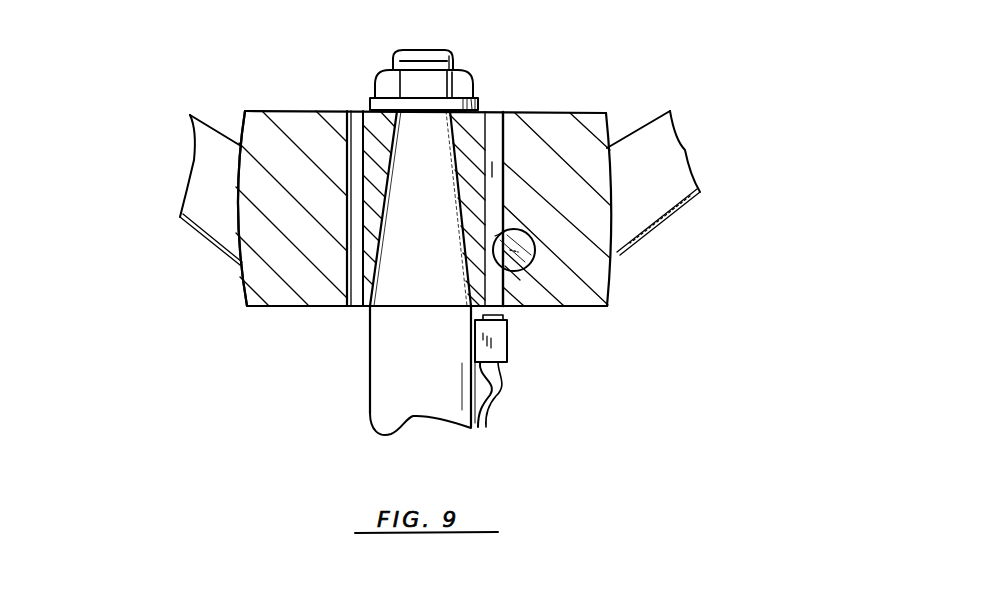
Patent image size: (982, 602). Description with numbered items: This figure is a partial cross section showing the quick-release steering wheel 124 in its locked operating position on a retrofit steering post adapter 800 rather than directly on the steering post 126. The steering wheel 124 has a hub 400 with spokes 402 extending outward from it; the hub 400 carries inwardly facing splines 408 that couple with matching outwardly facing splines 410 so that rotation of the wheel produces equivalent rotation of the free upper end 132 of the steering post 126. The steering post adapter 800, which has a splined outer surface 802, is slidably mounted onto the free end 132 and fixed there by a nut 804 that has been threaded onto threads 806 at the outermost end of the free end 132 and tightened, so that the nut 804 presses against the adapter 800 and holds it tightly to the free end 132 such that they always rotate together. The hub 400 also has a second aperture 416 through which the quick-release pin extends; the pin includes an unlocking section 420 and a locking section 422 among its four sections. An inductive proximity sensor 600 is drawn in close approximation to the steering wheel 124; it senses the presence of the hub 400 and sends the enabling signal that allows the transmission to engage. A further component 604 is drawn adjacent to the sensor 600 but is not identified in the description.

The steering wheel 124 is at (235, 284).
The steering post 126 is at (350, 233).
The free upper end 132 is at (447, 50).
The hub 400 is at (260, 110).
The spokes 402 is at (200, 165).
The inwardly facing splines 408 is at (356, 193).
The outwardly facing splines 410 is at (353, 200).
The second aperture 416 is at (514, 237).
The unlocking section 420 is at (538, 252).
The locking section 422 is at (530, 263).
The inductive proximity sensor 600 is at (518, 351).
The cable 604 is at (493, 388).
The steering post adapter 800 is at (358, 94).
The splined outer surface 802 is at (372, 132).
The nut 804 is at (473, 84).
The threads 806 is at (455, 61).